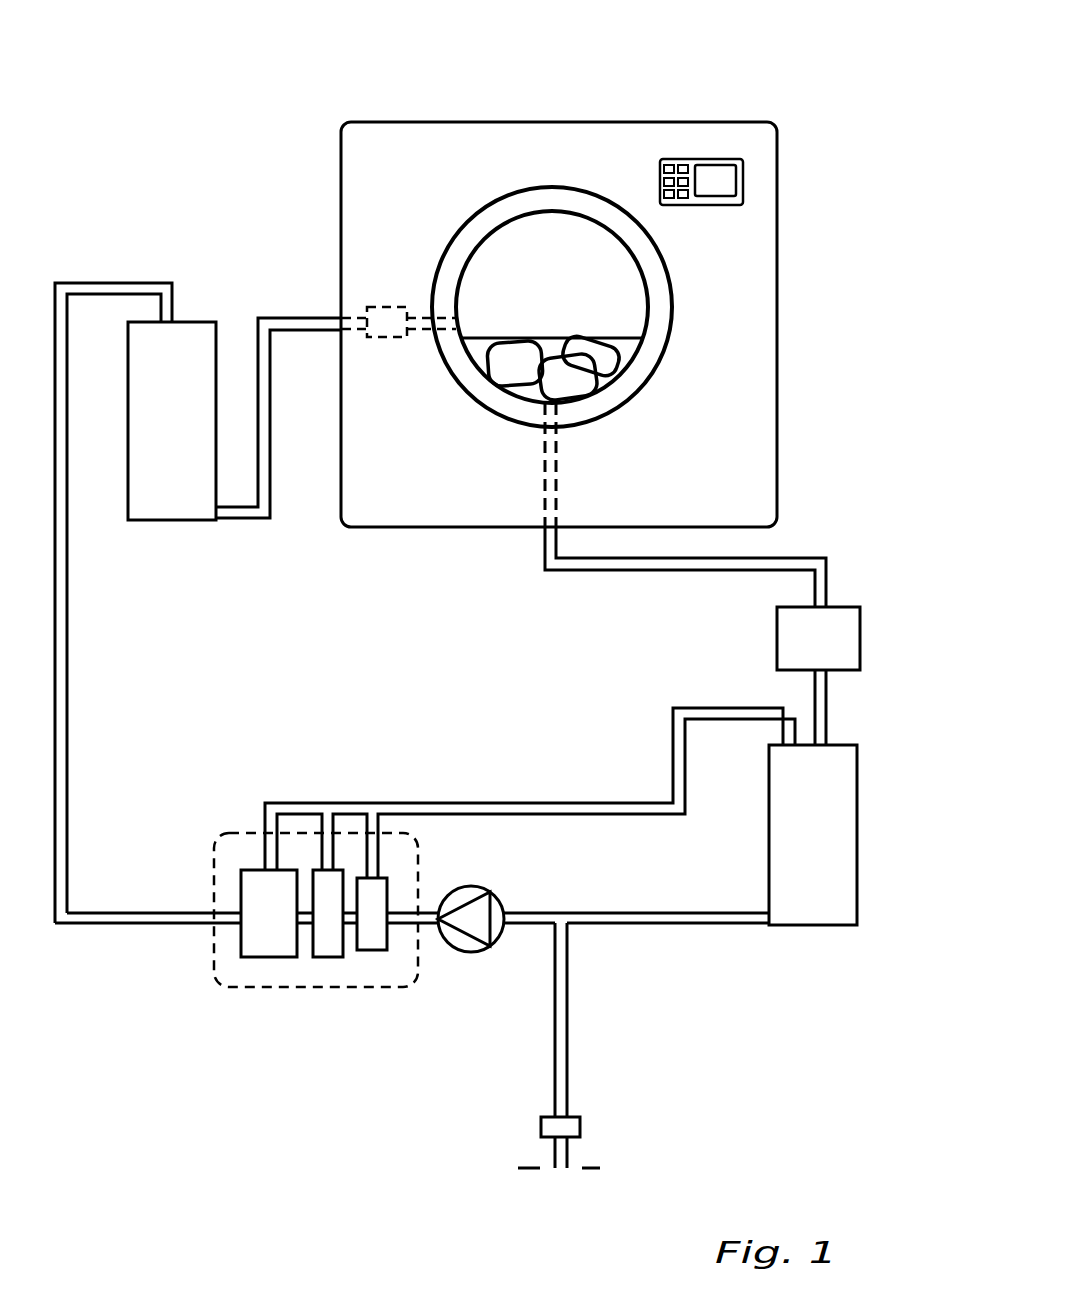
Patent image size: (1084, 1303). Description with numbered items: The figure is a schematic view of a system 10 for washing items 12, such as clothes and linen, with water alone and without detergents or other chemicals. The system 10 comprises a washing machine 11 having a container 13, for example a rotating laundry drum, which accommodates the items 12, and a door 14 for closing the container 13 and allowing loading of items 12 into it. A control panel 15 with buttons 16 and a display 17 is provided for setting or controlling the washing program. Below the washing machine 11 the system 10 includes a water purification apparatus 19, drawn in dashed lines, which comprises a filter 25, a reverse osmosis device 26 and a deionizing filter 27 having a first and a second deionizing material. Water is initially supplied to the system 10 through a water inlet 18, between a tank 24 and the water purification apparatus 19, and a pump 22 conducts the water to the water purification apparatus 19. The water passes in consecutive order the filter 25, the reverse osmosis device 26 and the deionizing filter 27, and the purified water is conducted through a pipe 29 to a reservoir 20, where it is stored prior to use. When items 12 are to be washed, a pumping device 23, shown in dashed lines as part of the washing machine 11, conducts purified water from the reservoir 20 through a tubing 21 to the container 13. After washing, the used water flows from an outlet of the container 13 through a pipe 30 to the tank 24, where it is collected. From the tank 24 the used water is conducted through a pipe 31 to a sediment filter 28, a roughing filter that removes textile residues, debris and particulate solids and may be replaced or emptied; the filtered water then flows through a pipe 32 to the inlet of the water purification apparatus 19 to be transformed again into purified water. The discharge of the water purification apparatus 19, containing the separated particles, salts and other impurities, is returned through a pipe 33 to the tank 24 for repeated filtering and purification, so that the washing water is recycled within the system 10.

The system 10 is at (559, 263).
The washing machine 11 is at (424, 143).
The items 12 is at (603, 355).
The container 13 is at (596, 296).
The door 14 is at (610, 250).
The control panel 15 is at (710, 129).
The buttons 16 is at (662, 160).
The display 17 is at (727, 173).
The water inlet 18 is at (563, 1073).
The water purification apparatus 19 is at (287, 942).
The reservoir 20 is at (192, 335).
The tubing 21 is at (265, 322).
The pump 22 is at (465, 942).
The pumping device 23 is at (373, 305).
The tank 24 is at (858, 834).
The filter 25 is at (373, 943).
The reverse osmosis device 26 is at (325, 947).
The deionizing filter 27 is at (260, 950).
The sediment filter 28 is at (851, 643).
The pipe 29 is at (85, 917).
The pipe 30 is at (820, 550).
The pipe 31 is at (742, 918).
The pipe 32 is at (590, 913).
The pipe 33 is at (467, 808).